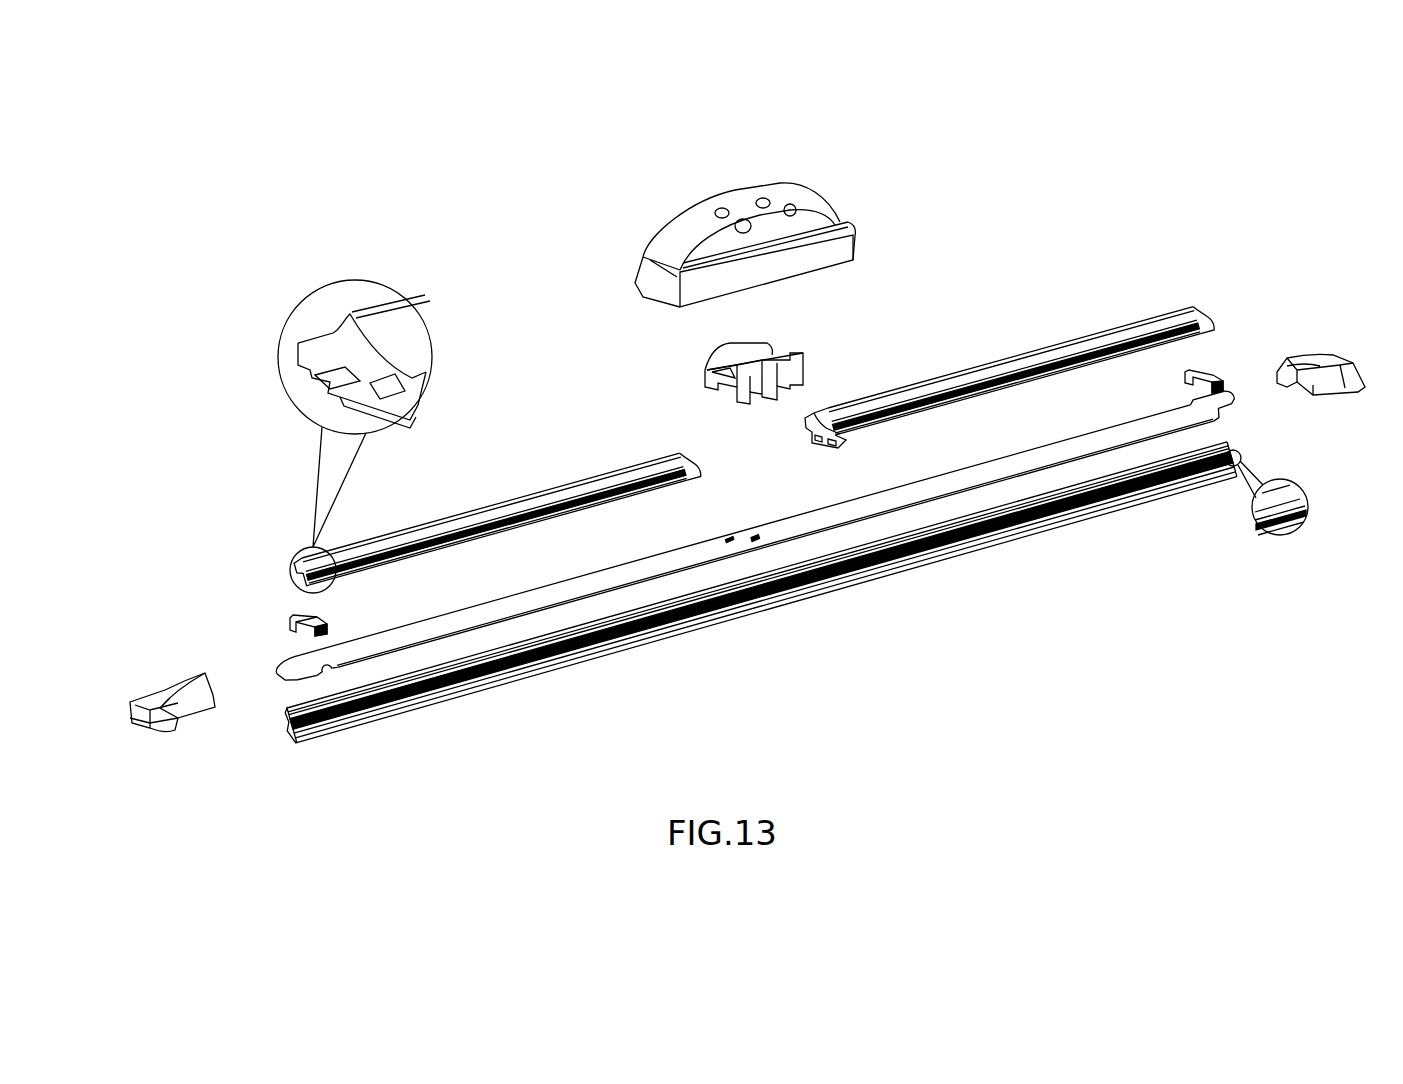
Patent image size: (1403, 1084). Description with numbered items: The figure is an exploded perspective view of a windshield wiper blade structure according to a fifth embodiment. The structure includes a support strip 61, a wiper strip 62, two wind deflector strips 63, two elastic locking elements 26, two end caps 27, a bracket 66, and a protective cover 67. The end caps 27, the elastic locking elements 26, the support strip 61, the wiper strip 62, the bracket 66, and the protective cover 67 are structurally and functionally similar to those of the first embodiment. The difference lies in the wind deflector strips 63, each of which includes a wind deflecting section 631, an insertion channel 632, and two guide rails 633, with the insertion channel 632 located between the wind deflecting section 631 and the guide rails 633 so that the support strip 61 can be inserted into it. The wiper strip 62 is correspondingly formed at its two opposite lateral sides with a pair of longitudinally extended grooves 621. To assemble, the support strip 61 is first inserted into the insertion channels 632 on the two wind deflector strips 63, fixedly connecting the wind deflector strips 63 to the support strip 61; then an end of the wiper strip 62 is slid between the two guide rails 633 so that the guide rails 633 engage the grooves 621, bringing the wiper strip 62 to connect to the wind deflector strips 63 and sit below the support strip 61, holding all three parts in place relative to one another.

The elastic locking element 26 is at (287, 615).
The end cap 27 is at (1300, 343).
The support strip 61 is at (302, 668).
The wiper strip 62 is at (572, 683).
The longitudinally extended groove 621 is at (1282, 497).
The wind deflector strip 63 is at (1100, 318).
The wind deflecting section 631 is at (347, 332).
The insertion channel 632 is at (400, 393).
The guide rail 633 is at (323, 388).
The bracket 66 is at (777, 367).
The protective cover 67 is at (833, 223).